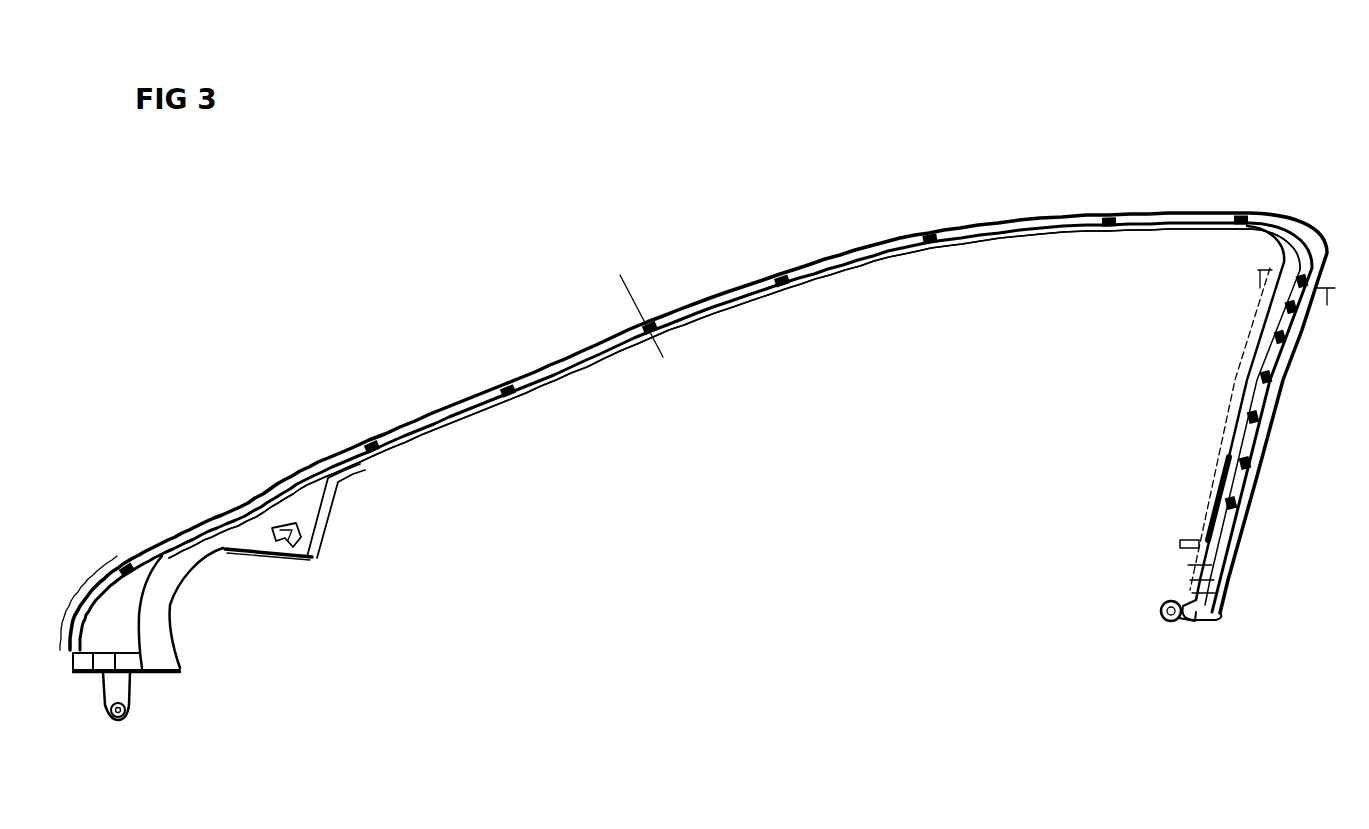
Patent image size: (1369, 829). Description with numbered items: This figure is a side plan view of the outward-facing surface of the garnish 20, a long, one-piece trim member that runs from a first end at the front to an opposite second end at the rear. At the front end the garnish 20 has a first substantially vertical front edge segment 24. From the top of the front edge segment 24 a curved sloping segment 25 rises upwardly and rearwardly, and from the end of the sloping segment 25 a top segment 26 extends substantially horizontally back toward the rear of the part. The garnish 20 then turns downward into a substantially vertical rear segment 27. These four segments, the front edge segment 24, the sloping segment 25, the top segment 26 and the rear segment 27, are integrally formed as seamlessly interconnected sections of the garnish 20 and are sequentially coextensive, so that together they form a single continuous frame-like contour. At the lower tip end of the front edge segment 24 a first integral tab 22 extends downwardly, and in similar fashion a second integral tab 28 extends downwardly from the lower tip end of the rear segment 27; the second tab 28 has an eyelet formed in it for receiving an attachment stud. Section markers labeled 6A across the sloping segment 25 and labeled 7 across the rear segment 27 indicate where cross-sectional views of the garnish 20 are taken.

The garnish 20 is at (704, 194).
The first integral tab 22 is at (137, 693).
The front edge segment 24 is at (173, 622).
The curved sloping segment 25 is at (513, 377).
The top segment 26 is at (1040, 217).
The rear segment 27 is at (1253, 482).
The second integral tab 28 is at (1175, 627).
The section line 6A is at (648, 363).
The section line 7 is at (1327, 310).